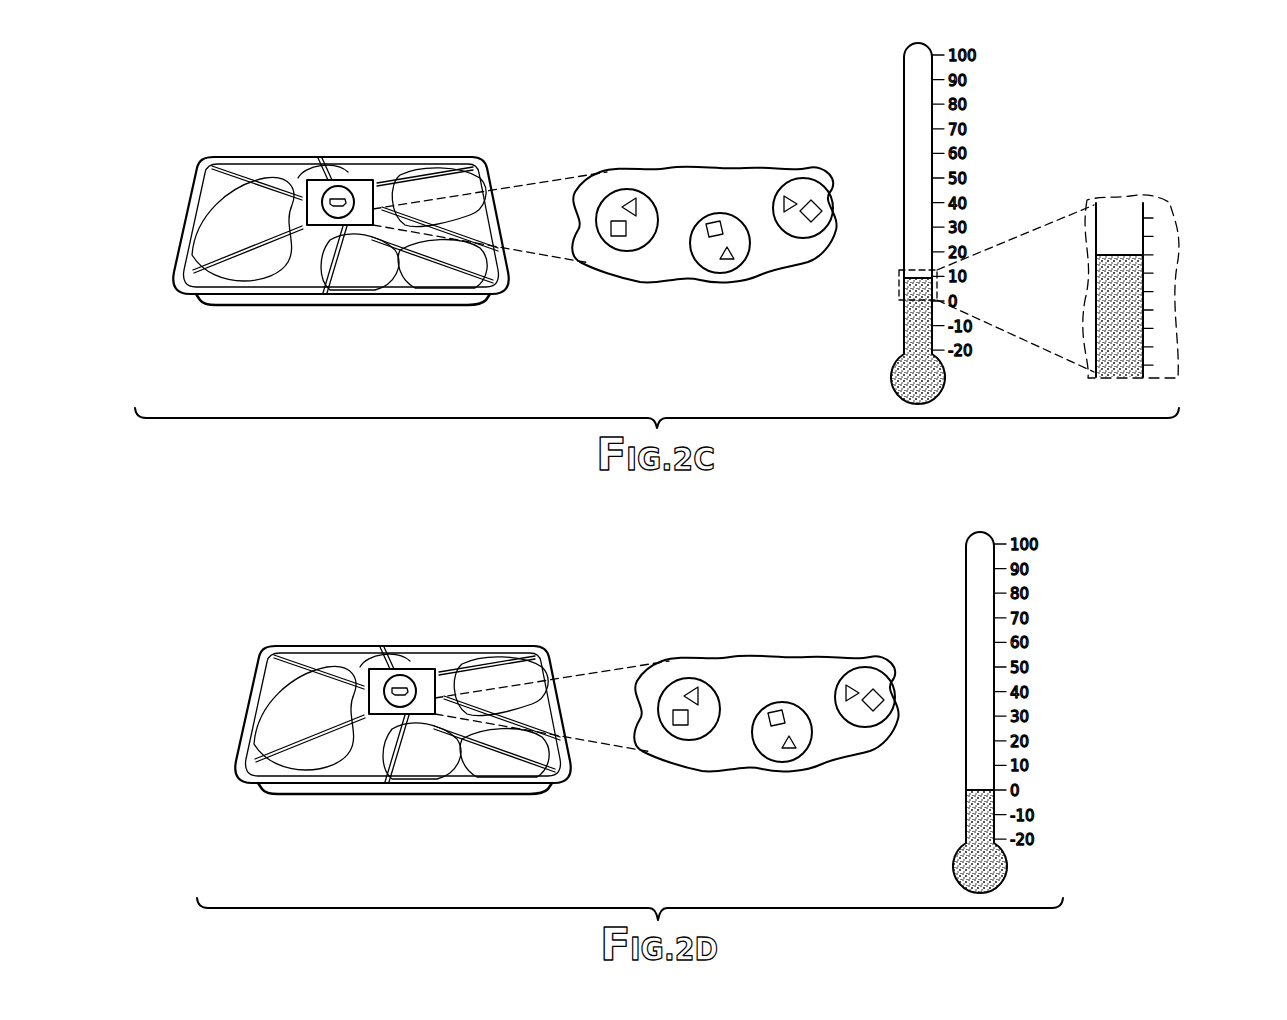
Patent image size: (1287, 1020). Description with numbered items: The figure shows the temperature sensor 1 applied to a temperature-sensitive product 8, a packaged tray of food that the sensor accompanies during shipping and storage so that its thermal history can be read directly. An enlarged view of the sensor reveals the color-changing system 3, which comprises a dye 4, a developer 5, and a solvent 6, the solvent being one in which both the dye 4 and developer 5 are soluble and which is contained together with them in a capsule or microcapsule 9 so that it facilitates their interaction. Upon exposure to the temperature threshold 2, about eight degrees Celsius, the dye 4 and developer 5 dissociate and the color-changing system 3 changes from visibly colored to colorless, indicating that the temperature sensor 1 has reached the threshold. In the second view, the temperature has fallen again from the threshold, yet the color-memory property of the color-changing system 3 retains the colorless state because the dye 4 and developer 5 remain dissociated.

In FIG. 2C, the temperature sensor 1 is at (353, 178).
In FIG. 2D, the temperature sensor 1 is at (420, 635).
In FIG. 2C, the temperature threshold 2 is at (1172, 251).
In FIG. 2C, the color-changing system 3 is at (318, 190).
In FIG. 2D, the color-changing system 3 is at (630, 666).
In FIG. 2C, the dye 4 is at (711, 222).
In FIG. 2D, the dye 4 is at (802, 662).
In FIG. 2C, the developer 5 is at (726, 258).
In FIG. 2D, the developer 5 is at (815, 787).
In FIG. 2C, the solvent 6 is at (648, 272).
In FIG. 2D, the solvent 6 is at (773, 756).
In FIG. 2C, the temperature-sensitive product 8 is at (210, 193).
In FIG. 2D, the temperature-sensitive product 8 is at (368, 720).
In FIG. 2C, the capsule or microcapsule 9 is at (693, 265).
In FIG. 2D, the capsule or microcapsule 9 is at (778, 779).